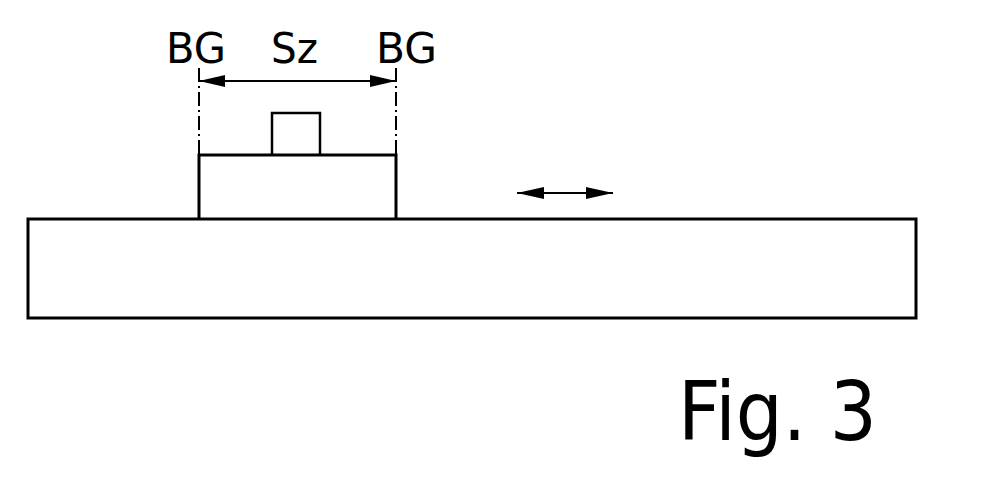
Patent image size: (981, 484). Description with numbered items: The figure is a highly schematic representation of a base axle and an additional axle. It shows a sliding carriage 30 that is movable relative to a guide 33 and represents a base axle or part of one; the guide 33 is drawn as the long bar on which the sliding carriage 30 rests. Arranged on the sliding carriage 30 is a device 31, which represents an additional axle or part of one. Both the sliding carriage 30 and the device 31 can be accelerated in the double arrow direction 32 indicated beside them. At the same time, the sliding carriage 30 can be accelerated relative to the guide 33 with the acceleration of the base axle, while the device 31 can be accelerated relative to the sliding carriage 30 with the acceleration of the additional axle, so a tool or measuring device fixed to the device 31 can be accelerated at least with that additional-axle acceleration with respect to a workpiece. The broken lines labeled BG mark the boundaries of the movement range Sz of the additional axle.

The sliding carriage 30 is at (247, 197).
The device 31 is at (285, 133).
The double arrow direction 32 is at (562, 190).
The guide 33 is at (470, 295).